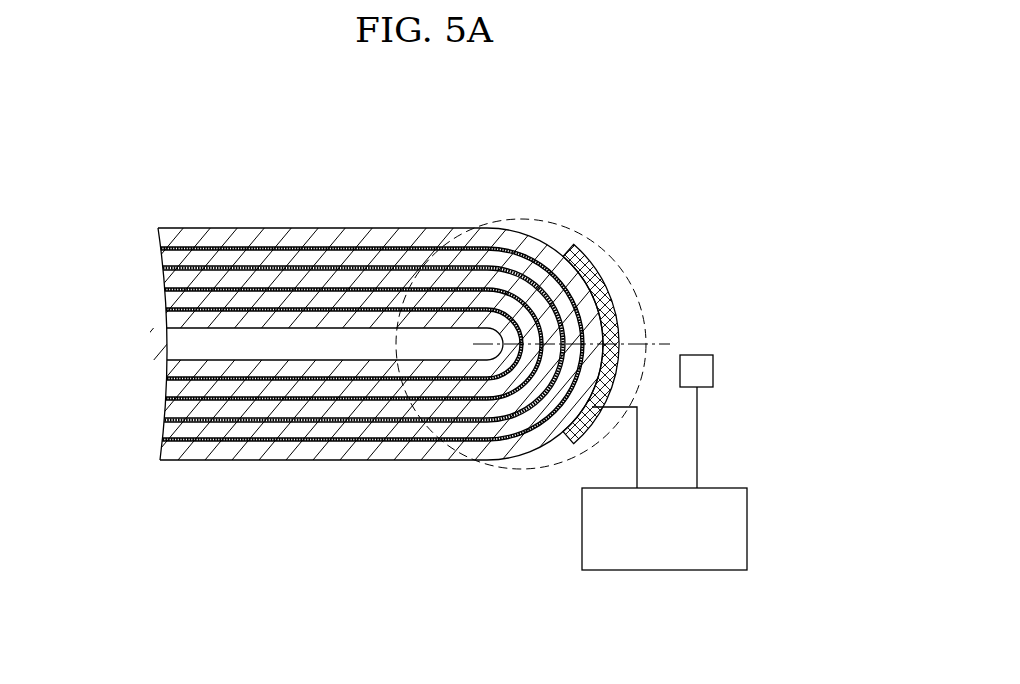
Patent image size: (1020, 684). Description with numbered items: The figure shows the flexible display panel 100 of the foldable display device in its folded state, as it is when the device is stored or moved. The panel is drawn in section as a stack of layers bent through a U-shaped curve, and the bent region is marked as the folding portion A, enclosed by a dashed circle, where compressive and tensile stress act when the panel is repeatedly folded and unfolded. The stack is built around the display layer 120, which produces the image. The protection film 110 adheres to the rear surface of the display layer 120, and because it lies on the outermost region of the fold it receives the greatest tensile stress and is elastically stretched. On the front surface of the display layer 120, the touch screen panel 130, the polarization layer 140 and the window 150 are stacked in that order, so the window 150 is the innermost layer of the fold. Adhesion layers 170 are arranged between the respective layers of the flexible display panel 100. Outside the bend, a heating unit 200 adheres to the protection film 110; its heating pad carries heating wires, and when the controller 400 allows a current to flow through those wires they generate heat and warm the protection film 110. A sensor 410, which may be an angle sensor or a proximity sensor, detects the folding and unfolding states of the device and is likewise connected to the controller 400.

The flexible display panel 100 is at (214, 211).
The protection film 110 is at (160, 236).
The display layer 120 is at (161, 257).
The touch screen panel 130 is at (162, 277).
The polarization layer 140 is at (161, 296).
The window 150 is at (165, 315).
The adhesion layers 170 is at (168, 438).
The heating unit 200 is at (595, 274).
The controller 400 is at (643, 572).
The sensor 410 is at (714, 371).
The folding portion A is at (562, 221).